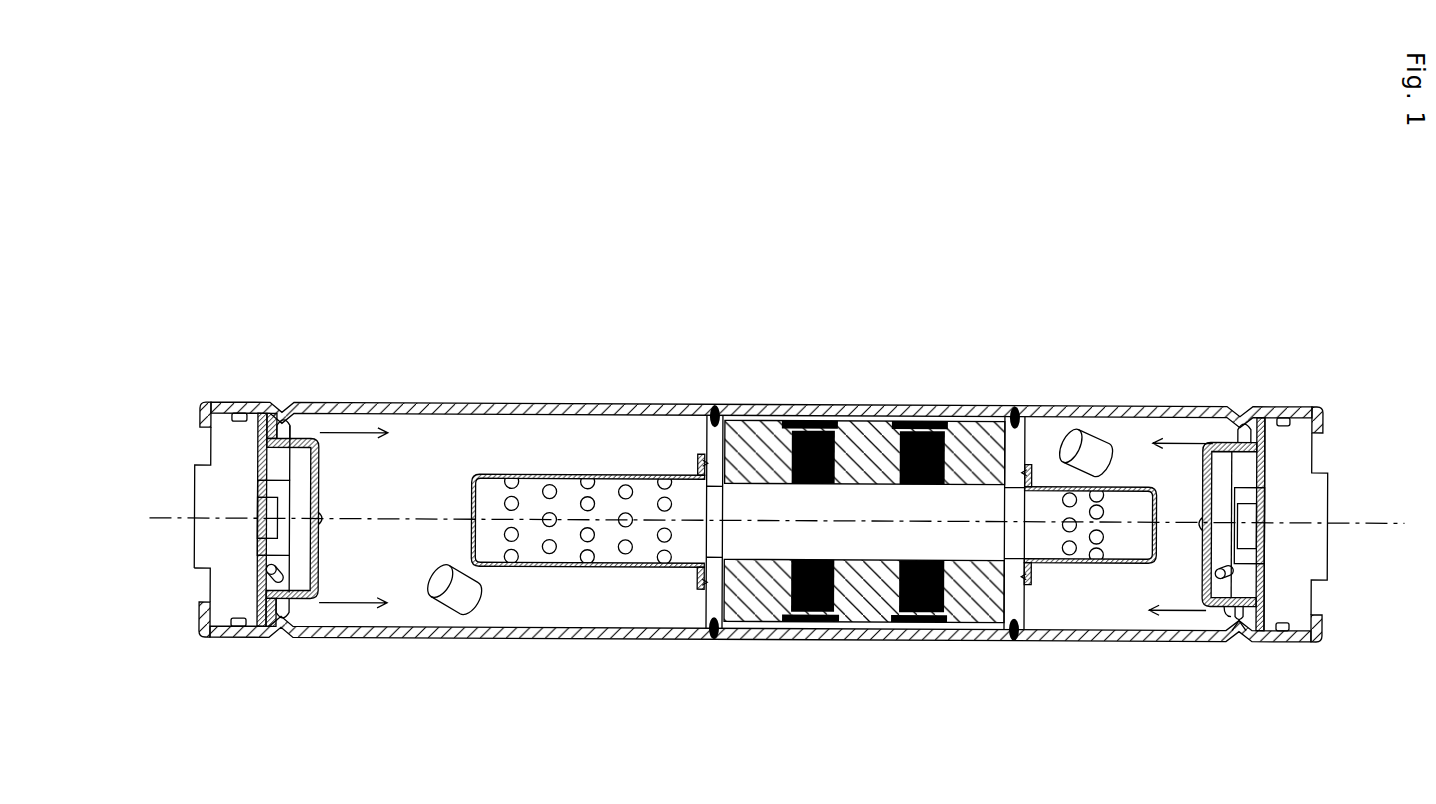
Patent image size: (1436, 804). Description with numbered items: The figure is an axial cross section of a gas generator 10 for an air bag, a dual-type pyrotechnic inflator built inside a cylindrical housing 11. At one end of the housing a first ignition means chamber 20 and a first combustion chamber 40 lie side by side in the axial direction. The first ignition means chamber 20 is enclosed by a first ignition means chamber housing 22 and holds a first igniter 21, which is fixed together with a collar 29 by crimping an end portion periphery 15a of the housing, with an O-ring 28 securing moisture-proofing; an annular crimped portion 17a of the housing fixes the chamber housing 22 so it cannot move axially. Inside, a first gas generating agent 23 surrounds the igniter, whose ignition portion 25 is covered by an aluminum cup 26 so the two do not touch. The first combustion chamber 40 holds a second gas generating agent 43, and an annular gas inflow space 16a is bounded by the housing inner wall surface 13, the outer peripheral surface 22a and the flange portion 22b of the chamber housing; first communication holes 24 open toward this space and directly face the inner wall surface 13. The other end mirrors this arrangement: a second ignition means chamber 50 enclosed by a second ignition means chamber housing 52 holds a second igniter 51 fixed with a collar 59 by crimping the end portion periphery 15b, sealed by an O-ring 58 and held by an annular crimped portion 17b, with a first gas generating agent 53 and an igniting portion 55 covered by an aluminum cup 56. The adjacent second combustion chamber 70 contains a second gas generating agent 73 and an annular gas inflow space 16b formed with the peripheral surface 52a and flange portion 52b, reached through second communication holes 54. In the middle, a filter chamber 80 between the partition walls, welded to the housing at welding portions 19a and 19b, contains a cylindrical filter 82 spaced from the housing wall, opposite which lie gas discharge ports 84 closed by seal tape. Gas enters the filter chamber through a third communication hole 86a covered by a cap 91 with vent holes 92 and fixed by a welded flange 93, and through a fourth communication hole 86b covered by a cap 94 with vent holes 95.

The gas generator 10 is at (662, 360).
The cylindrical housing 11 is at (485, 402).
The housing inner wall surface 13 is at (541, 628).
The end portion periphery 15a is at (200, 411).
The end portion periphery 15b is at (1320, 427).
The annular gas inflow space 16a is at (287, 410).
The annular gas inflow space 16b is at (1238, 415).
The annular crimped portion 17a is at (281, 405).
The annular crimped portion 17b is at (1238, 422).
The welding portion 19a is at (717, 403).
The welding portion 19b is at (1014, 404).
The first ignition means chamber 20 is at (270, 453).
The first igniter 21 is at (243, 537).
The first ignition means chamber housing 22 is at (330, 565).
The outer peripheral surface 22a is at (291, 576).
The flange portion 22b is at (270, 406).
The first gas generating agent 23 is at (227, 603).
The first communication holes 24 is at (282, 626).
The ignition portion 25 is at (263, 505).
The aluminum cup 26 is at (265, 563).
The O-ring 28 is at (237, 637).
The collar 29 is at (203, 607).
The first combustion chamber 40 is at (505, 455).
The second gas generating agent 43 is at (465, 592).
The second ignition means chamber 50 is at (1268, 455).
The second igniter 51 is at (1313, 527).
The second ignition means chamber housing 52 is at (1196, 495).
The peripheral surface 52a is at (1225, 610).
The flange portion 52b is at (1234, 620).
The first gas generating agent 53 is at (1290, 612).
The second communication holes 54 is at (1240, 626).
The igniting portion 55 is at (1257, 537).
The aluminum cup 56 is at (1267, 484).
The O-ring 58 is at (1282, 635).
The collar 59 is at (1317, 613).
The second combustion chamber 70 is at (1075, 603).
The second gas generating agent 73 is at (1067, 430).
The filter chamber 80 is at (864, 538).
The cylindrical filter 82 is at (846, 637).
The gas discharge ports 84 is at (860, 405).
The third communication hole 86a is at (718, 533).
The fourth communication hole 86b is at (1012, 517).
The cap 91 is at (546, 462).
The vent holes 92 is at (589, 503).
The flange 93 is at (700, 578).
The cap 94 is at (1047, 475).
The vent holes 95 is at (1097, 538).